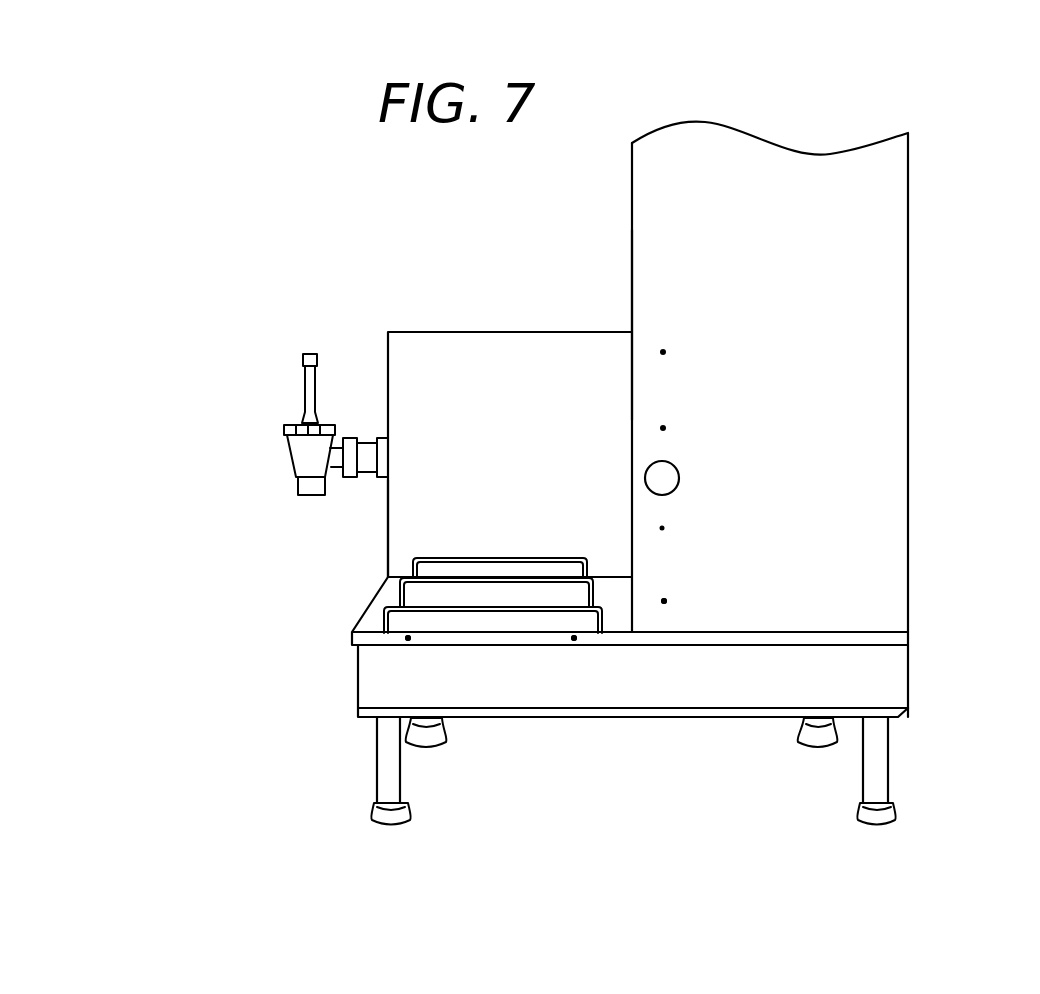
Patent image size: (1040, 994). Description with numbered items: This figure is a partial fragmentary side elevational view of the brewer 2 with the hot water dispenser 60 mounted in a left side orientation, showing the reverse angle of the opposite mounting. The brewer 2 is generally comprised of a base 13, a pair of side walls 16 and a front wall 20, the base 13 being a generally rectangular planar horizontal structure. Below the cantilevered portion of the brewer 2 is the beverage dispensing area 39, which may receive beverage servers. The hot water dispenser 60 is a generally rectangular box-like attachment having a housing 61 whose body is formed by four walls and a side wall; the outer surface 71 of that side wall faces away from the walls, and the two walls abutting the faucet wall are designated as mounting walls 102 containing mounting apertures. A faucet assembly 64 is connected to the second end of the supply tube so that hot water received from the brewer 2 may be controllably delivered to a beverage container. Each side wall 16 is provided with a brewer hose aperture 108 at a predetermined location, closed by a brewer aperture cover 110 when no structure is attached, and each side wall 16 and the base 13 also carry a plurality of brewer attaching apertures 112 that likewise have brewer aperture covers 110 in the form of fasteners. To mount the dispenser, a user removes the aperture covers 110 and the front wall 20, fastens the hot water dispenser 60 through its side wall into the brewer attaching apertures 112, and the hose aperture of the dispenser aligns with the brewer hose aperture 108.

The brewer 2 is at (918, 105).
The base 13 is at (855, 685).
The side wall 16 is at (877, 298).
The front wall 20 is at (632, 243).
The beverage dispensing area 39 is at (460, 252).
The hot water dispenser 60 is at (370, 348).
The housing 61 is at (385, 502).
The faucet assembly 64 is at (292, 455).
The outer surface 71 is at (407, 538).
The mounting walls 102 is at (878, 648).
The brewer hose aperture 108 is at (662, 495).
The brewer aperture cover 110 is at (680, 478).
The brewer attaching apertures 112 is at (664, 601).